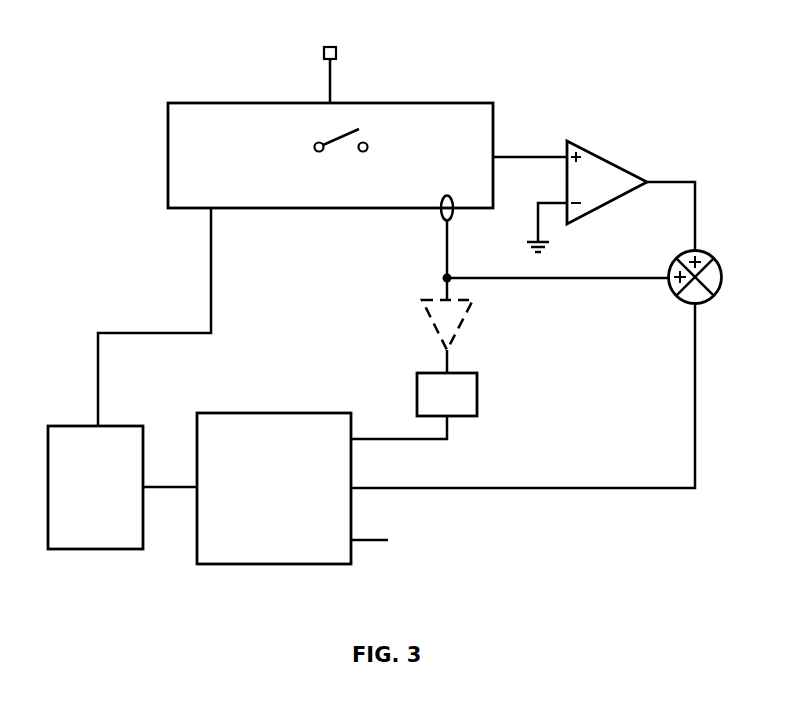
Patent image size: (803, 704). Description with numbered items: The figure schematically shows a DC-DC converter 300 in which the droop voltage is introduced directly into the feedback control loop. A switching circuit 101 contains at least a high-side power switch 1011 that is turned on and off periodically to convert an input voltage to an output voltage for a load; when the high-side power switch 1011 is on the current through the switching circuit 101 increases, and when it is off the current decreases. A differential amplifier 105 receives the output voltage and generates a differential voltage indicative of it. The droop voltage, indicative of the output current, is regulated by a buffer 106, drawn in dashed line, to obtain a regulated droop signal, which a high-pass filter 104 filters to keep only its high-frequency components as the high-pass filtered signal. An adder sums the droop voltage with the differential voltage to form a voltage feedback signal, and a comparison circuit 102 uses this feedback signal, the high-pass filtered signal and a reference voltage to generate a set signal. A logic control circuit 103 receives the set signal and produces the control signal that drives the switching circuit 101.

The DC-DC converter 300 is at (645, 63).
The switching circuit 101 is at (330, 127).
The high-side power switch 1011 is at (343, 157).
The comparison circuit 102 is at (274, 488).
The logic control circuit 103 is at (95, 487).
The high-pass filter 104 is at (447, 394).
The differential amplifier 105 is at (570, 192).
The buffer 106 is at (461, 325).